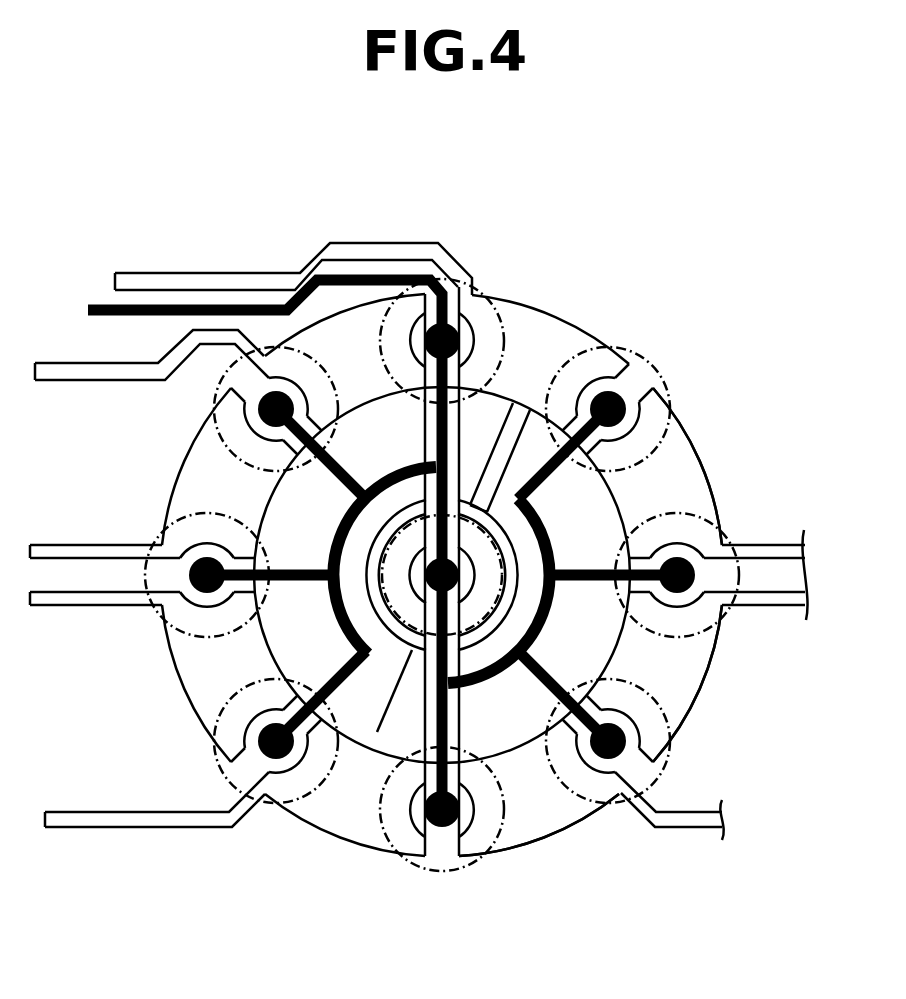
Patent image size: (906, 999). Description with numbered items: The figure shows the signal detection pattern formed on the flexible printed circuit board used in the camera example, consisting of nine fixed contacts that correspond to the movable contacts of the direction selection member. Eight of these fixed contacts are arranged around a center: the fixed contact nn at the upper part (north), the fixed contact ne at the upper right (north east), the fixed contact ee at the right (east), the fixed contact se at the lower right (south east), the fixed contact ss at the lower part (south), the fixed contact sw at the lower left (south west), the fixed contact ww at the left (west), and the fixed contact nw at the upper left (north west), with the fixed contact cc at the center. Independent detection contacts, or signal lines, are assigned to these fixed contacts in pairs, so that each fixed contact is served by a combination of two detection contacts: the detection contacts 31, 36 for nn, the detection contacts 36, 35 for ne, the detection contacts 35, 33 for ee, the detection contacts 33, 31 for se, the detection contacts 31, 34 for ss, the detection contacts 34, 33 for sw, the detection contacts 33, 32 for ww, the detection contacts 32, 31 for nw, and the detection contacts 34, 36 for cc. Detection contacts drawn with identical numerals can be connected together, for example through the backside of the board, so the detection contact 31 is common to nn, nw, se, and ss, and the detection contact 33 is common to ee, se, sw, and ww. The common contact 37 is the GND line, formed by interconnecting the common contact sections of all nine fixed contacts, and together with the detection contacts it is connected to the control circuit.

The detection contact 31 is at (350, 337).
The detection contact 32 is at (195, 480).
The detection contact 33 is at (205, 689).
The detection contact 34 is at (345, 815).
The detection contact 35 is at (680, 472).
The detection contact 36 is at (570, 342).
The common contact 37 is at (102, 305).
The fixed contact cc is at (500, 505).
The fixed contact nn is at (500, 312).
The fixed contact ne is at (665, 392).
The fixed contact ee is at (705, 515).
The fixed contact se is at (672, 712).
The fixed contact ss is at (452, 870).
The fixed contact sw is at (290, 800).
The fixed contact ww is at (168, 640).
The fixed contact nw is at (215, 412).